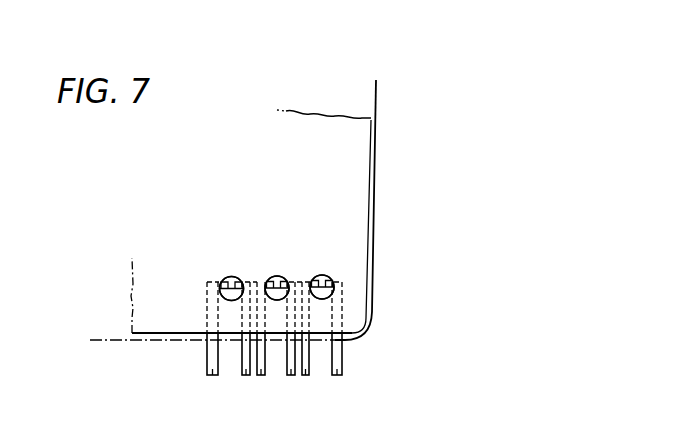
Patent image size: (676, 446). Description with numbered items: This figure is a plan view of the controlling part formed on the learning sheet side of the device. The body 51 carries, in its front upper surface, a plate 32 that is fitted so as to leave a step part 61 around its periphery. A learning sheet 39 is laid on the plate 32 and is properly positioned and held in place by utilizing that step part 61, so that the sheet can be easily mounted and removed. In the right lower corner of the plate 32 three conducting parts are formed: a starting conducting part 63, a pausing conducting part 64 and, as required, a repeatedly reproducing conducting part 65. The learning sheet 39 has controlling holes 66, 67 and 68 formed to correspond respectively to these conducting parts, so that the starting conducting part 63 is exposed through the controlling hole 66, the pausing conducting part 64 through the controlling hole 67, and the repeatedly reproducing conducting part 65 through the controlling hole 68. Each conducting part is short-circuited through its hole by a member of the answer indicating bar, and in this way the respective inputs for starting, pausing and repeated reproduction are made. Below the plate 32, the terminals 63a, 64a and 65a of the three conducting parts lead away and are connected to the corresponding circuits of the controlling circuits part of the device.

The plate 32 is at (130, 299).
The learning sheet 39 is at (296, 132).
The body 51 is at (373, 167).
The step part 61 is at (375, 98).
The starting conducting part 63 is at (332, 277).
The terminal 63a is at (338, 380).
The pausing conducting part 64 is at (267, 277).
The terminal 64a is at (288, 380).
The repeatedly reproducing conducting part 65 is at (222, 278).
The terminal 65a is at (235, 378).
The controlling hole 66 is at (327, 276).
The controlling hole 67 is at (280, 277).
The controlling hole 68 is at (230, 277).